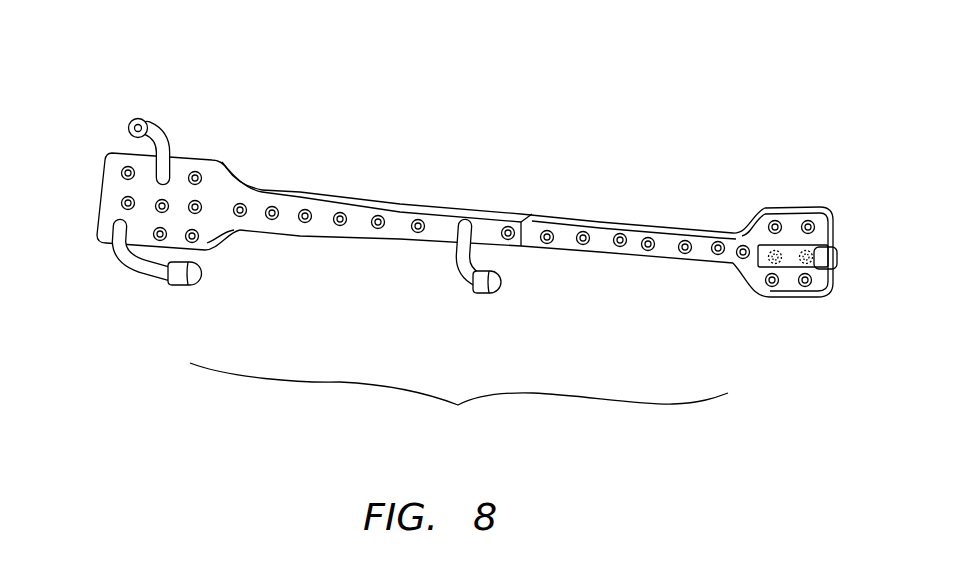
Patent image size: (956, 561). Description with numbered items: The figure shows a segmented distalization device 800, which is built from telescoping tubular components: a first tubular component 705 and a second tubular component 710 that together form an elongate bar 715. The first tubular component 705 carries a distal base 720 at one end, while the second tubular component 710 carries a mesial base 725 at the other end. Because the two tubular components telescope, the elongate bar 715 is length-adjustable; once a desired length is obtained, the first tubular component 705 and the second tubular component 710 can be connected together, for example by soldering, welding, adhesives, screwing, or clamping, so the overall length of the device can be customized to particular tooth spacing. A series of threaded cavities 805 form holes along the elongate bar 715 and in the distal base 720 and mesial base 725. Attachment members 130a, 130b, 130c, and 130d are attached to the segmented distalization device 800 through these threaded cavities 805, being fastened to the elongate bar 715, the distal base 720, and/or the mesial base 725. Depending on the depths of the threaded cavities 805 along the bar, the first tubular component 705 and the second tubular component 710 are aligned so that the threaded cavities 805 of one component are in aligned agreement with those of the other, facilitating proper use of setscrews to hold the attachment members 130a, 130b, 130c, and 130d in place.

The segmented distalization device 800 is at (448, 214).
The first tubular component 705 is at (383, 224).
The second tubular component 710 is at (636, 241).
The elongate bar 715 is at (459, 402).
The distal base 720 is at (117, 185).
The mesial base 725 is at (786, 277).
The threaded cavities 805 is at (381, 216).
The attachment member 130a is at (479, 295).
The attachment member 130b is at (177, 283).
The attachment member 130c is at (143, 121).
The attachment member 130d is at (821, 246).